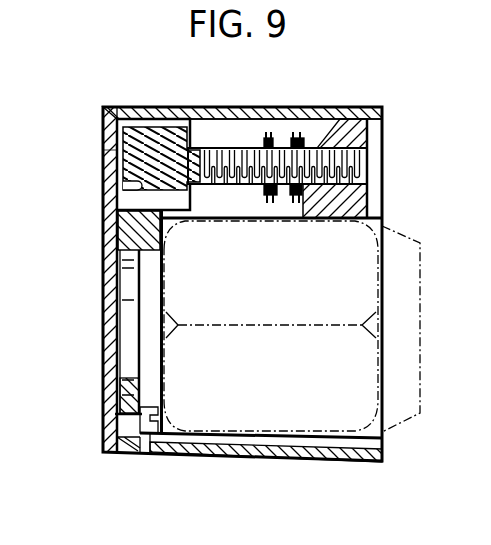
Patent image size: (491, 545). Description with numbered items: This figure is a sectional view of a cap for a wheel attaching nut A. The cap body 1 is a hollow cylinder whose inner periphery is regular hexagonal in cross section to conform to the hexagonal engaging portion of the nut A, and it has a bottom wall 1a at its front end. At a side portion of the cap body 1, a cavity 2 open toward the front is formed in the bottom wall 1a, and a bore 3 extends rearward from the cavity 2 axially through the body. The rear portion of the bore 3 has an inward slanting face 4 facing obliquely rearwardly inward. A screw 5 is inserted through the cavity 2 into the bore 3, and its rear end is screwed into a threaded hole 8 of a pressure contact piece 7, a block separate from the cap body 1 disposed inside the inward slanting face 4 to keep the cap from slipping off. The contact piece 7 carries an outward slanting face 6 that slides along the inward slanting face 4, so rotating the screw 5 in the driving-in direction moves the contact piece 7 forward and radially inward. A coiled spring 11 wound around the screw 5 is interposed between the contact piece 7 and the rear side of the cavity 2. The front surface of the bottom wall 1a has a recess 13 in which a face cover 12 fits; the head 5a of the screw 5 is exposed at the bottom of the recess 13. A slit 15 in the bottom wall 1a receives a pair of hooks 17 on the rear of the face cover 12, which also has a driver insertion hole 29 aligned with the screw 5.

The cap body 1 is at (241, 455).
The bottom wall 1a is at (123, 238).
The cavity 2 is at (140, 186).
The bore 3 is at (252, 107).
The inward slanting face 4 is at (383, 133).
The screw 5 is at (217, 107).
The head 5a is at (160, 107).
The outward slanting face 6 is at (350, 132).
The pressure contact piece 7 is at (355, 200).
The threaded hole 8 is at (367, 168).
The coiled spring 11 is at (289, 203).
The face cover 12 is at (110, 333).
The recess 13 is at (128, 400).
The slit 15 is at (105, 423).
The hooks 17 is at (145, 452).
The driver insertion hole 29 is at (108, 146).
The wheel attaching nut A is at (412, 413).